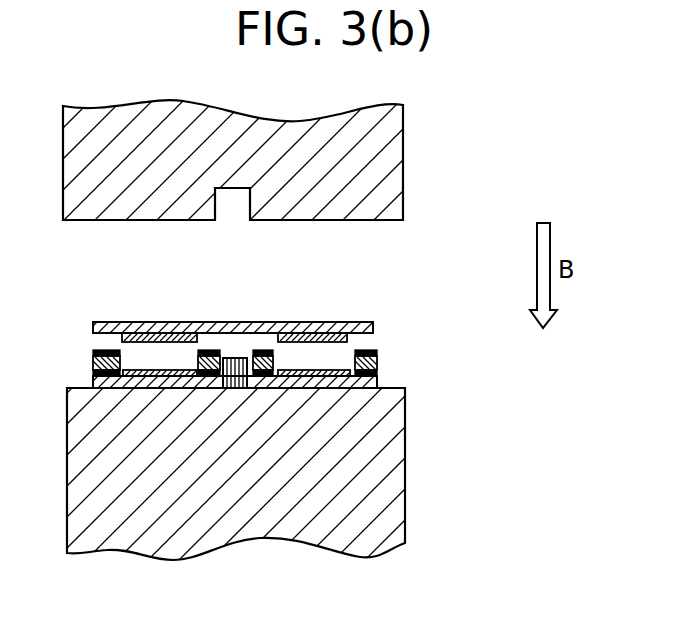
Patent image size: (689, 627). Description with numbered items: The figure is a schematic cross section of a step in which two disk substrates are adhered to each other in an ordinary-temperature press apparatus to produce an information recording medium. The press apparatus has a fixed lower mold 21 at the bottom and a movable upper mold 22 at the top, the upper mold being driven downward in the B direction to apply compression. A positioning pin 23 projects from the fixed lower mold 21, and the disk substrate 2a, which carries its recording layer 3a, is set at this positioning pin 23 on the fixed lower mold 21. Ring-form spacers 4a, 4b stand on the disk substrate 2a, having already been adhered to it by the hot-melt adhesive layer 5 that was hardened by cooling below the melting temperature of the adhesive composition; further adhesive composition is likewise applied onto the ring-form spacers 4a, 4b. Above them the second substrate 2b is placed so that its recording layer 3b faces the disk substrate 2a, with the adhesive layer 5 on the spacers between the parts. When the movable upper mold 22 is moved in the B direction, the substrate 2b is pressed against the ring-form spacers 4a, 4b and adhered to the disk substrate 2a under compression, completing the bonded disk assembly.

The movable upper mold 22 is at (403, 154).
The fixed lower mold 21 is at (405, 514).
The substrate 2b is at (363, 322).
The recording layer 3b is at (322, 342).
The disk substrate 2a is at (333, 381).
The recording layer 3a is at (360, 380).
The ring-form spacer 4b is at (207, 351).
The ring-form spacer 4a is at (379, 364).
The adhesive layer 5 is at (379, 352).
The positioning pin 23 is at (235, 389).